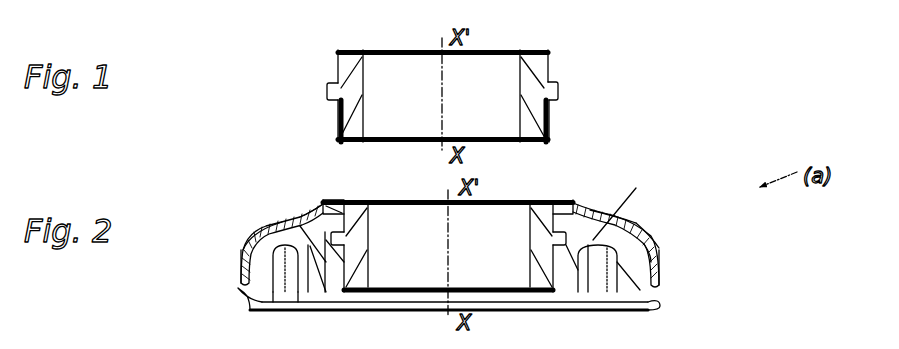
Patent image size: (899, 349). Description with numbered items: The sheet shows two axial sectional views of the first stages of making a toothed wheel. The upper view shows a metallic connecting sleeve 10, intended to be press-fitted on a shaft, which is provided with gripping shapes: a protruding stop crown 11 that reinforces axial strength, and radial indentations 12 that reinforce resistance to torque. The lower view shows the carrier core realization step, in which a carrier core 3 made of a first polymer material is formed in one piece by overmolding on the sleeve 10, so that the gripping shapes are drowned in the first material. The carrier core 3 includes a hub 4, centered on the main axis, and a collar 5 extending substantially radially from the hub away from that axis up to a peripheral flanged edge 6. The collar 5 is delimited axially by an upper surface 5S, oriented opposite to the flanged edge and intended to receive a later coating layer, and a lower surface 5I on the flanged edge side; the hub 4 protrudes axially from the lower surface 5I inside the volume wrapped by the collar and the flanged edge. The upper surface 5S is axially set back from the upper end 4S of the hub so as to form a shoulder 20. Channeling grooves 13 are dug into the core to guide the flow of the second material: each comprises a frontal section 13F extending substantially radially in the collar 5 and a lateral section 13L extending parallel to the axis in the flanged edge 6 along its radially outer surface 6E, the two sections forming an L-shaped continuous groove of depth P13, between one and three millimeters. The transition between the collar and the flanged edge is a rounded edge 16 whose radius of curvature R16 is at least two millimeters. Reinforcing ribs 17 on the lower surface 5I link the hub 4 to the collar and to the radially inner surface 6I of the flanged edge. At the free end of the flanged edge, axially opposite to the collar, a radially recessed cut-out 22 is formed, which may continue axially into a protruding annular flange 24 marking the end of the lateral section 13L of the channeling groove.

In FIG. 1, the connecting sleeve 10 is at (530, 61).
In FIG. 2, the connecting sleeve 10 is at (543, 206).
In FIG. 1, the protruding stop crown 11 is at (549, 92).
In FIG. 2, the protruding stop crown 11 is at (345, 240).
In FIG. 1, the radial indentations 12 is at (551, 121).
In FIG. 2, the carrier core 3 is at (616, 229).
In FIG. 2, the hub 4 is at (332, 199).
In FIG. 2, the upper end of the hub 4S is at (341, 199).
In FIG. 2, the collar 5 is at (307, 216).
In FIG. 2, the upper surface of the collar 5S is at (261, 216).
In FIG. 2, the lower surface of the collar 5I is at (298, 300).
In FIG. 2, the flanged edge 6 is at (270, 270).
In FIG. 2, the radially inner surface of the flanged edge 6I is at (288, 303).
In FIG. 2, the radially outer surface of the flanged edge 6E is at (660, 268).
In FIG. 2, the channeling grooves 13 is at (636, 221).
In FIG. 2, the frontal section 13F is at (578, 210).
In FIG. 2, the lateral section 13L is at (661, 260).
In FIG. 2, the depth of the channeling grooves P13 is at (268, 255).
In FIG. 2, the rounded edge 16 is at (659, 231).
In FIG. 2, the radius of curvature of the rounded edge R16 is at (640, 257).
In FIG. 2, the reinforcing ribs 17 is at (600, 296).
In FIG. 2, the shoulder 20 is at (311, 208).
In FIG. 2, the radially recessed cut-out 22 is at (656, 303).
In FIG. 2, the protruding annular flange 24 is at (238, 288).